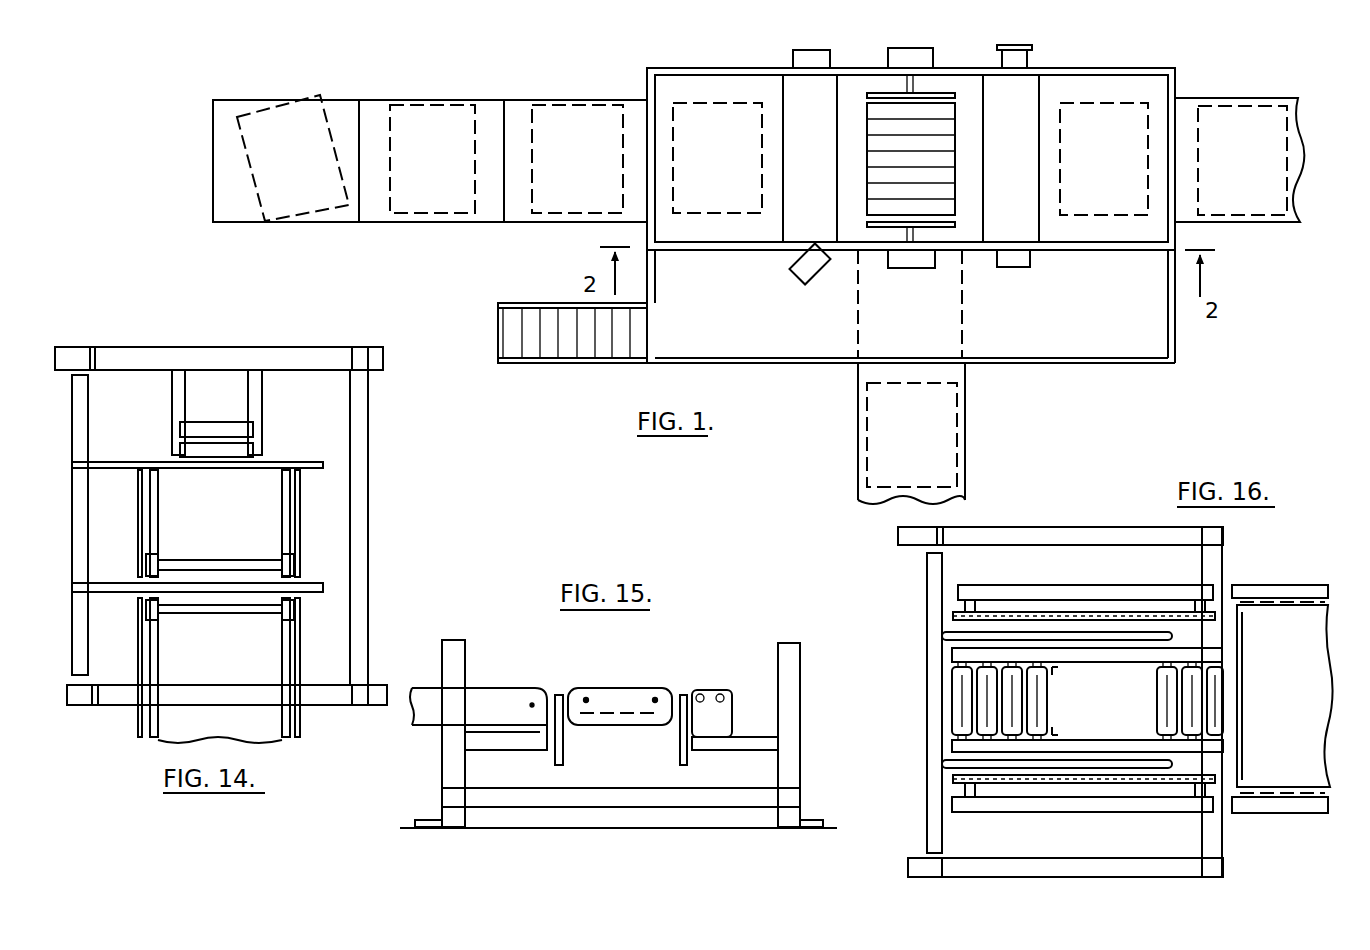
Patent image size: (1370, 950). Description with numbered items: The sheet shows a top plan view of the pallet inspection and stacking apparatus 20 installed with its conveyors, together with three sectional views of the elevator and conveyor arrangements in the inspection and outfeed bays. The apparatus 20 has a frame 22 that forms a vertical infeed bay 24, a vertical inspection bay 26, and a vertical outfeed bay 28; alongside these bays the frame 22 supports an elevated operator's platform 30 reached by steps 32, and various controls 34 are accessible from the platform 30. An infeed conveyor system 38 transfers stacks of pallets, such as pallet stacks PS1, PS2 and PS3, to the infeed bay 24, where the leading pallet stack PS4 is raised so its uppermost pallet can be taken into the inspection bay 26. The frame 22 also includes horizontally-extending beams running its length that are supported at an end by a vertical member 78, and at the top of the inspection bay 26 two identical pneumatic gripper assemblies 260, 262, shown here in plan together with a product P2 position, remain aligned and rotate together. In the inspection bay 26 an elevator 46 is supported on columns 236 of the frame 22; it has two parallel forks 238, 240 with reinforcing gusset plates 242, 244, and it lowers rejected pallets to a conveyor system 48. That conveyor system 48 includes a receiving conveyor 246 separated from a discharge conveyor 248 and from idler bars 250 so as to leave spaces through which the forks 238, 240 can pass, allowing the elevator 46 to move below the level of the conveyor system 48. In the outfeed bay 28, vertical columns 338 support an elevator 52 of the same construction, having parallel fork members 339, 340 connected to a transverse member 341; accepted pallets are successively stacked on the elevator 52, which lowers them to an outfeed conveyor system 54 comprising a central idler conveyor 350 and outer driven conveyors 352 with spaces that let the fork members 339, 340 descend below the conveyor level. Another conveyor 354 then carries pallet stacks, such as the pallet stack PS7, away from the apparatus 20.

In FIG. 1, the pallet inspection and stacking apparatus 20 is at (1150, 375).
In FIG. 1, the frame 22 is at (643, 88).
In FIG. 1, the vertical infeed bay 24 is at (728, 157).
In FIG. 1, the vertical inspection bay 26 is at (888, 162).
In FIG. 1, the vertical outfeed bay 28 is at (1117, 68).
In FIG. 16, the vertical outfeed bay 28 is at (1099, 685).
In FIG. 1, the elevated operator's platform 30 is at (1070, 366).
In FIG. 1, the steps 32 is at (550, 366).
In FIG. 1, the controls 34 is at (806, 276).
In FIG. 1, the infeed conveyor system 38 is at (430, 196).
In FIG. 14, the elevator 46 is at (70, 432).
In FIG. 15, the elevator 46 is at (553, 683).
In FIG. 1, the conveyor system 48 is at (855, 432).
In FIG. 14, the conveyor system 48 is at (226, 524).
In FIG. 15, the conveyor system 48 is at (601, 708).
In FIG. 16, the elevator 52 is at (925, 633).
In FIG. 1, the outfeed conveyor system 54 is at (1269, 152).
In FIG. 16, the outfeed conveyor system 54 is at (1293, 667).
In FIG. 16, the vertical member 78 is at (1232, 878).
In FIG. 14, the columns 236 is at (72, 347).
In FIG. 15, the columns 236 is at (460, 640).
In FIG. 14, the fork 238 is at (323, 588).
In FIG. 15, the fork 238 is at (560, 694).
In FIG. 16, the fork 238 is at (940, 527).
In FIG. 14, the fork 240 is at (323, 465).
In FIG. 15, the fork 240 is at (683, 694).
In FIG. 15, the reinforcing gusset plate 242 is at (560, 765).
In FIG. 15, the reinforcing gusset plate 244 is at (680, 752).
In FIG. 14, the receiving conveyor 246 is at (300, 530).
In FIG. 15, the receiving conveyor 246 is at (618, 688).
In FIG. 14, the discharge conveyor 248 is at (300, 665).
In FIG. 15, the discharge conveyor 248 is at (480, 688).
In FIG. 14, the idler bars 250 is at (255, 450).
In FIG. 15, the idler bars 250 is at (700, 690).
In FIG. 1, the pneumatic gripper assembly 260 is at (877, 230).
In FIG. 1, the pneumatic gripper assembly 262 is at (864, 96).
In FIG. 16, the vertical columns 338 is at (905, 870).
In FIG. 16, the fork member 339 is at (1122, 768).
In FIG. 16, the fork member 340 is at (1120, 640).
In FIG. 16, the transverse member 341 is at (925, 680).
In FIG. 16, the central idler conveyor 350 is at (960, 705).
In FIG. 16, the outer driven conveyors 352 is at (1025, 600).
In FIG. 1, the conveyor 354 is at (1273, 224).
In FIG. 16, the conveyor 354 is at (1302, 585).
In FIG. 1, the product at second station P2 is at (962, 105).
In FIG. 1, the pallet stack PS1 is at (325, 215).
In FIG. 1, the pallet stack PS2 is at (418, 214).
In FIG. 1, the pallet stack PS3 is at (543, 214).
In FIG. 1, the pallet stack PS4 is at (700, 220).
In FIG. 1, the pallet stack PS7 is at (1290, 135).